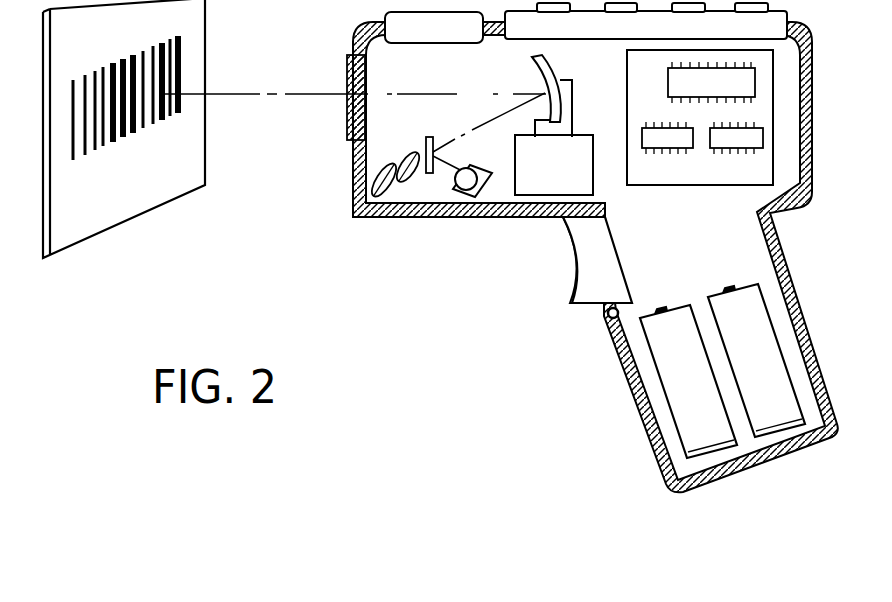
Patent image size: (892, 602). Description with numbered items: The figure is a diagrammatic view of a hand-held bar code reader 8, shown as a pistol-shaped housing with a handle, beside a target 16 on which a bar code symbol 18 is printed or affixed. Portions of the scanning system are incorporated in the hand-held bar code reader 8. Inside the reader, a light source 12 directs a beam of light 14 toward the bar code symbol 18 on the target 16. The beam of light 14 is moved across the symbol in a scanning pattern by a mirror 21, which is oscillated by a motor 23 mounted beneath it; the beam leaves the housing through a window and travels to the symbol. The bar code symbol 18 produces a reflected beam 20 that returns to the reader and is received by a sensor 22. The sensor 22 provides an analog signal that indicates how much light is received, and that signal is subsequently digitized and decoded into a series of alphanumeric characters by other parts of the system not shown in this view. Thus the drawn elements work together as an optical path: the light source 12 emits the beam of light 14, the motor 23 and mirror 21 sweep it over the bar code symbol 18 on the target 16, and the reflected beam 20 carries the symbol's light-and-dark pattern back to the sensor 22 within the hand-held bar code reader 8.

The hand-held bar code reader 8 is at (592, 247).
The light source 12 is at (376, 207).
The beam of light 14 is at (317, 77).
The target 16 is at (63, 43).
The bar code symbol 18 is at (132, 50).
The reflected beam 20 is at (243, 119).
The mirror 21 is at (553, 72).
The sensor 22 is at (485, 197).
The motor 23 is at (541, 176).